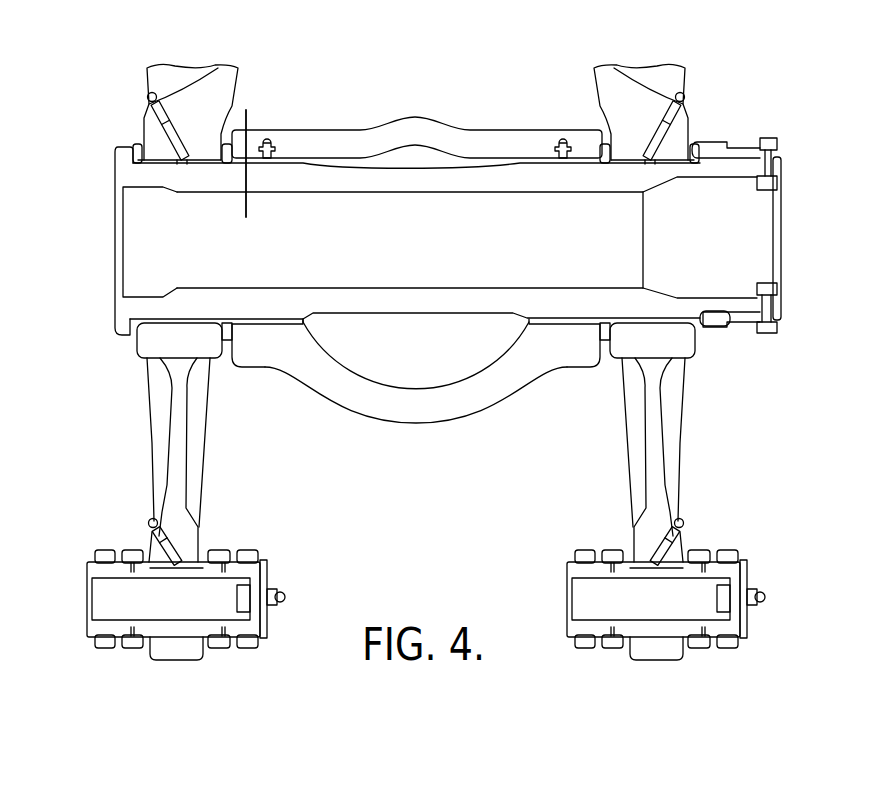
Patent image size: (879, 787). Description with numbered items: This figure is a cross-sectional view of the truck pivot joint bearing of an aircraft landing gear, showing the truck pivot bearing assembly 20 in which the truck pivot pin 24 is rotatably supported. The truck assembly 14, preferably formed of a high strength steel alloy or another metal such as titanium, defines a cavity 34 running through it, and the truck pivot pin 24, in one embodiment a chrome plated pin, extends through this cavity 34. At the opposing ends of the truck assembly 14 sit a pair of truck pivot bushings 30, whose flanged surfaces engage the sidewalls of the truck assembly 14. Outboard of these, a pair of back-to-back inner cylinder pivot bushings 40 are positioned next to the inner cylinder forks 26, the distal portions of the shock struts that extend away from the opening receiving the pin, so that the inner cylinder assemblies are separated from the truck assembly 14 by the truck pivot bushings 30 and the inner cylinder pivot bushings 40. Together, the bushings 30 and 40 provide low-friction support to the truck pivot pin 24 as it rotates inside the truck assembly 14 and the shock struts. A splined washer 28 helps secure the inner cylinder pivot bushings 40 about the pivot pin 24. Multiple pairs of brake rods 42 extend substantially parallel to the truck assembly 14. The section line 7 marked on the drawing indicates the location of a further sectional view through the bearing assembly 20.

The section line 7- 7 is at (238, 113).
The truck assembly 14 is at (384, 424).
The truck pivot bearing assembly 20 is at (122, 44).
The truck pivot pin 24 is at (117, 312).
The inner cylinder fork 26 is at (149, 437).
The splined washer 28 is at (729, 134).
The truck pivot bushing 30 is at (249, 328).
The cavity 34 is at (94, 233).
The inner cylinder pivot bushing 40 is at (133, 340).
The brake rod 42 is at (714, 538).